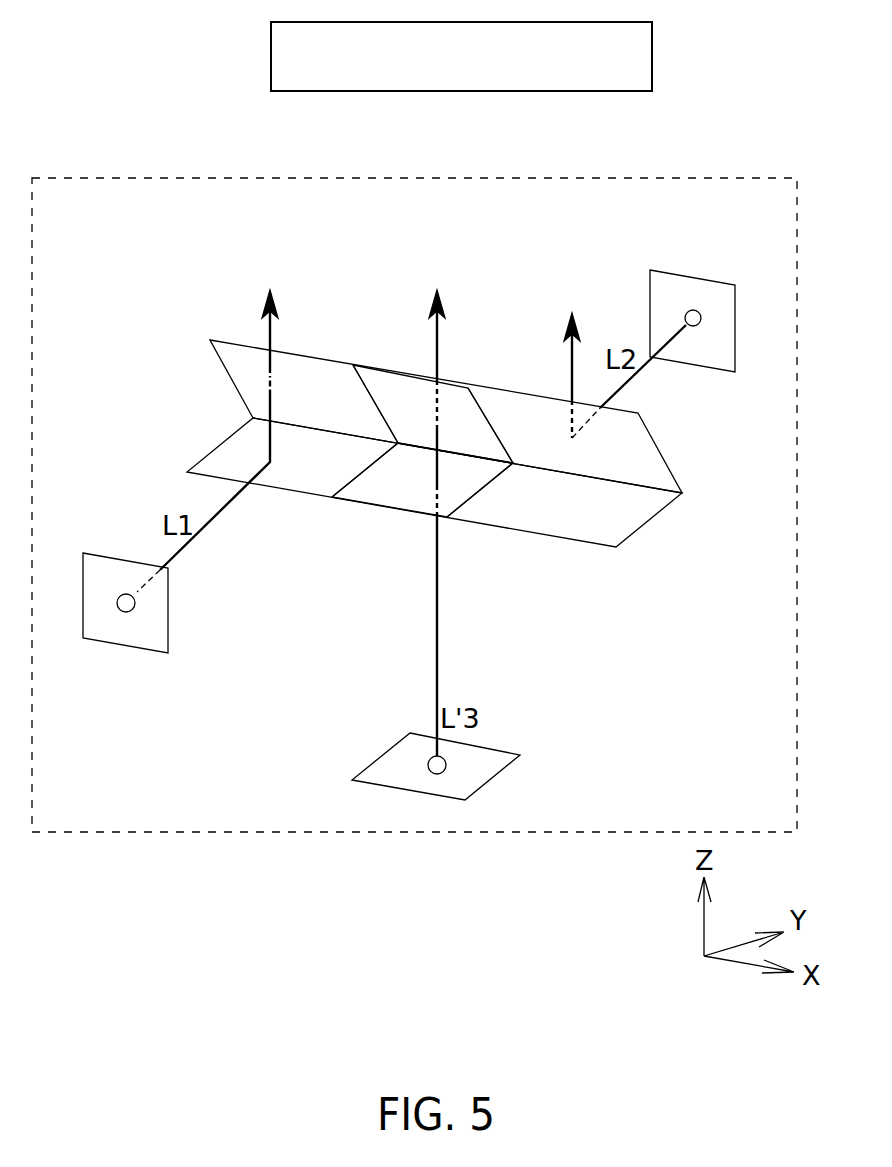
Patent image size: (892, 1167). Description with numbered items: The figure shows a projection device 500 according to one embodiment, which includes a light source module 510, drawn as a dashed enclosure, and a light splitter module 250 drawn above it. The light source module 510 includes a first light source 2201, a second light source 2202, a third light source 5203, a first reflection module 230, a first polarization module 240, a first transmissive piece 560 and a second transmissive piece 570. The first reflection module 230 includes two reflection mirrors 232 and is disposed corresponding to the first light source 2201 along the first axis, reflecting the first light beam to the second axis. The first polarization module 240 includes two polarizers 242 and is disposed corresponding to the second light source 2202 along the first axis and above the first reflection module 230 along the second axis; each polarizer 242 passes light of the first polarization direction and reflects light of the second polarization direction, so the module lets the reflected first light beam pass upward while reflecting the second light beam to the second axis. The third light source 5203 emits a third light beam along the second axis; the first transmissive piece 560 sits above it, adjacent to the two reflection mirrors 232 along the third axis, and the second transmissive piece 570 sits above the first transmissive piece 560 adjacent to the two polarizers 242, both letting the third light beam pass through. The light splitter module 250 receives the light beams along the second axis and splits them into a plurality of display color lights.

The light splitter module 250 is at (270, 58).
The projection device 500 is at (709, 118).
The light source module 510 is at (415, 833).
The first polarization module 240 is at (322, 196).
The polarizer 242 is at (510, 400).
The second transmissive piece 570 is at (410, 387).
The first reflection module 230 is at (310, 550).
The reflection mirror 232 is at (315, 482).
The first transmissive piece 560 is at (407, 492).
The first light source 2201 is at (125, 613).
The second light source 2202 is at (693, 310).
The third light source 5203 is at (447, 767).